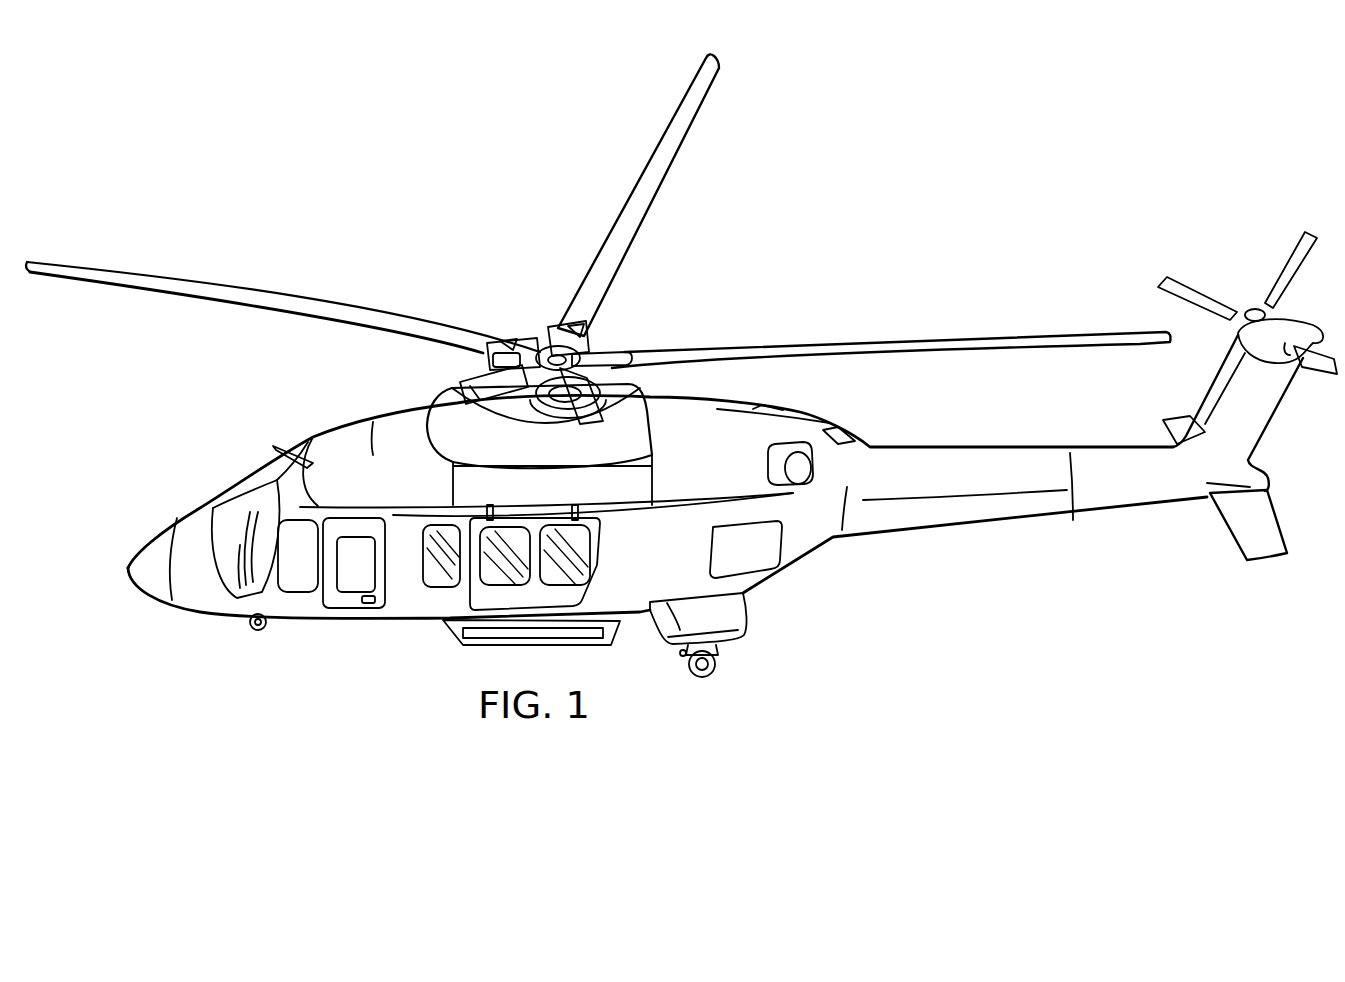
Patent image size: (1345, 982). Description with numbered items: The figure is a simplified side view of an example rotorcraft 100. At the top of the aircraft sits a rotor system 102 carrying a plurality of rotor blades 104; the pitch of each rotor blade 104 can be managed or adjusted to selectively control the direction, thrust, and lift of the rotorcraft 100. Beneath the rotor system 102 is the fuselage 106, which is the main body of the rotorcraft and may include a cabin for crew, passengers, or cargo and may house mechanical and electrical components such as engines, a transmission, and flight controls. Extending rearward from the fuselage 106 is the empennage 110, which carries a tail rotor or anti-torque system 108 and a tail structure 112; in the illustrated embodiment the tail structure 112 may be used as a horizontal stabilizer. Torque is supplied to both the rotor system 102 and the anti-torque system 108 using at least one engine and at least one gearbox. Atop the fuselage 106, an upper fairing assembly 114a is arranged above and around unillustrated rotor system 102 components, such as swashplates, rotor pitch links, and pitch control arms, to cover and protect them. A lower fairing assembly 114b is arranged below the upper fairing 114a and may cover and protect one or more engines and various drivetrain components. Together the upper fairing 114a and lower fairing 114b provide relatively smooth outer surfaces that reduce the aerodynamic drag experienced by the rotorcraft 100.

The rotorcraft 100 is at (356, 106).
The rotor system 102 is at (532, 302).
The rotor blades 104 is at (243, 290).
The fuselage 106 is at (303, 620).
The anti-torque system 108 is at (1227, 258).
The empennage 110 is at (1041, 521).
The tail structure 112 is at (1258, 522).
The upper fairing assembly 114a is at (630, 432).
The lower fairing assembly 114b is at (475, 487).